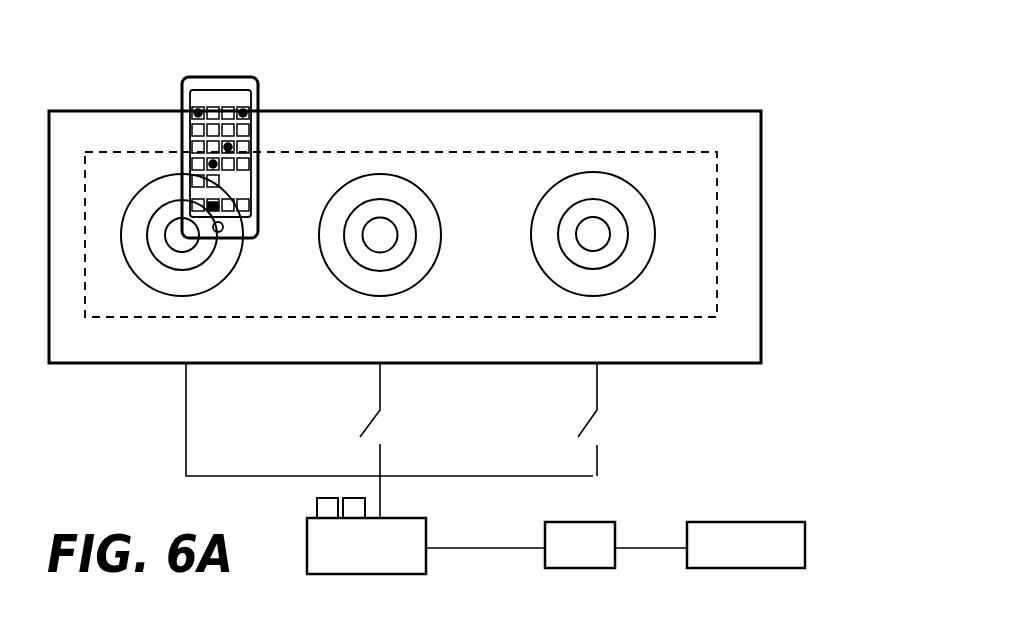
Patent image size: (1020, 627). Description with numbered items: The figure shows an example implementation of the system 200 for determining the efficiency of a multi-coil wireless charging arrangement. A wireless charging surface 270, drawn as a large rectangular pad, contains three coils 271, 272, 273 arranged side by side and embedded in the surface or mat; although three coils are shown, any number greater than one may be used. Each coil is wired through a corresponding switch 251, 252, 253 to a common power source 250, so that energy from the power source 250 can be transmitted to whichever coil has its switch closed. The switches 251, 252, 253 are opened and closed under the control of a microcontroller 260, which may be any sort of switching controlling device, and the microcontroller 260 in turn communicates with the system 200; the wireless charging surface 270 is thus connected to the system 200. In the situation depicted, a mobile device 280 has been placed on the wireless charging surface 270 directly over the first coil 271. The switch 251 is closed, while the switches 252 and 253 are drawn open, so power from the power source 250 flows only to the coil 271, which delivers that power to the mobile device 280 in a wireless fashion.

The system 200 is at (806, 530).
The power source 250 is at (427, 530).
The switch 251 is at (187, 378).
The switch 252 is at (381, 378).
The switch 253 is at (598, 378).
The microcontroller 260 is at (616, 530).
The wireless charging surface 270 is at (660, 110).
The coil 271 is at (145, 282).
The coil 272 is at (337, 275).
The coil 273 is at (552, 278).
The mobile device 280 is at (236, 74).